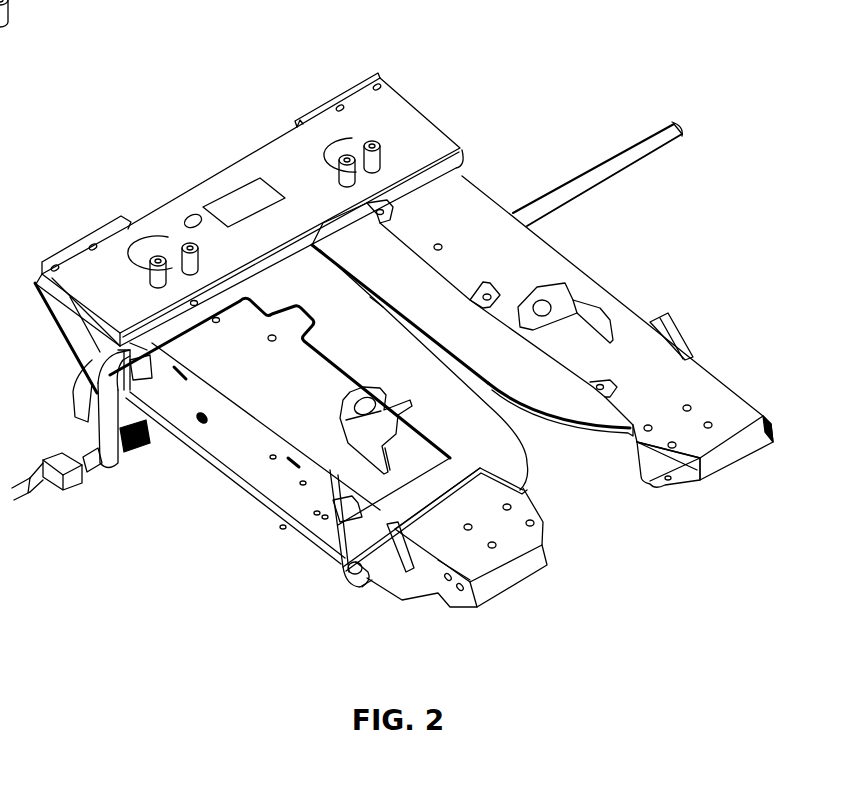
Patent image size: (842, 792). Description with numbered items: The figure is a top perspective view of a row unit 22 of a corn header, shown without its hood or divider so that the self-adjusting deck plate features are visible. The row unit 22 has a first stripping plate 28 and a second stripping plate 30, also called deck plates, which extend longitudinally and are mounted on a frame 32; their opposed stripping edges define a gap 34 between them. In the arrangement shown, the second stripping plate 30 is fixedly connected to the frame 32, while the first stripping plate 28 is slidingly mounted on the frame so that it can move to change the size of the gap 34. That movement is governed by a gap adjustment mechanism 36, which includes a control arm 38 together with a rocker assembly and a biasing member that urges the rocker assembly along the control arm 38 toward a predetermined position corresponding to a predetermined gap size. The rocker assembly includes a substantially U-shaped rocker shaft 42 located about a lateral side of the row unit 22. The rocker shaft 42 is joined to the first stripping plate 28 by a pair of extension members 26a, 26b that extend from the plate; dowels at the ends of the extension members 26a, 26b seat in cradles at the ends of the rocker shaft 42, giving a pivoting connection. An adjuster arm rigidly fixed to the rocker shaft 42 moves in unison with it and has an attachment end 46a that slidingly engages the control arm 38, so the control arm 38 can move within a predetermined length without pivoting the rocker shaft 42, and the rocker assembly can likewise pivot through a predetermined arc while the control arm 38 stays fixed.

The row unit 22 is at (583, 62).
The extension member 26a is at (187, 318).
The extension member 26b is at (395, 502).
The first stripping plate 28 is at (527, 463).
The second stripping plate 30 is at (603, 432).
The frame 32 is at (728, 397).
The gap 34 is at (528, 428).
The gap adjustment mechanism 36 is at (143, 483).
The control arm 38 is at (580, 180).
The rocker shaft 42 is at (247, 487).
The attachment end 46a is at (104, 485).